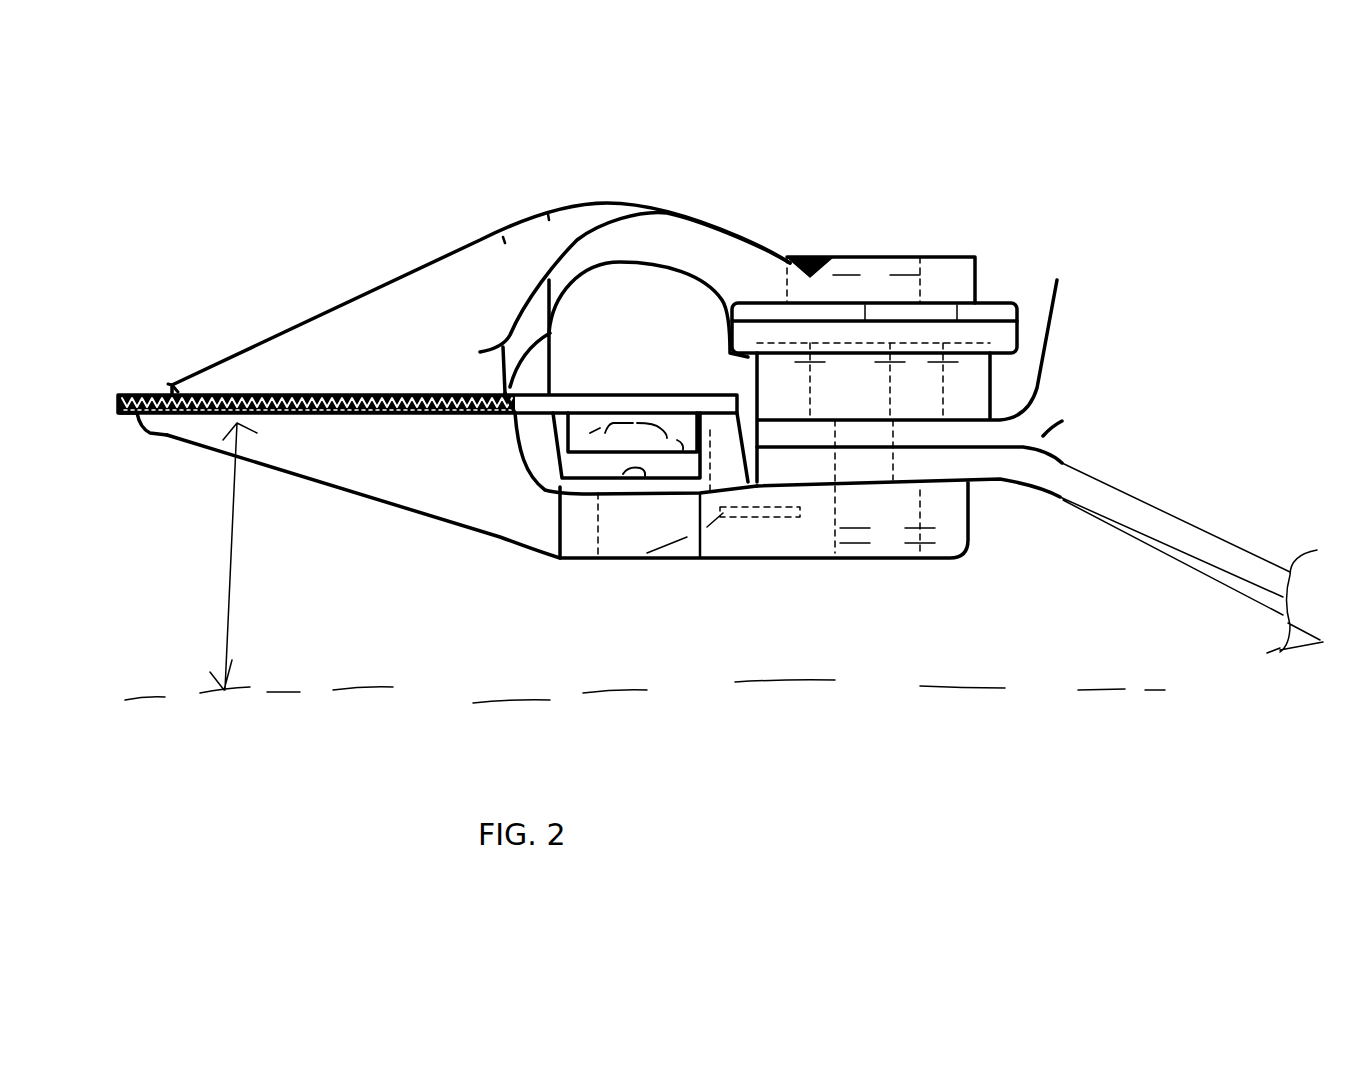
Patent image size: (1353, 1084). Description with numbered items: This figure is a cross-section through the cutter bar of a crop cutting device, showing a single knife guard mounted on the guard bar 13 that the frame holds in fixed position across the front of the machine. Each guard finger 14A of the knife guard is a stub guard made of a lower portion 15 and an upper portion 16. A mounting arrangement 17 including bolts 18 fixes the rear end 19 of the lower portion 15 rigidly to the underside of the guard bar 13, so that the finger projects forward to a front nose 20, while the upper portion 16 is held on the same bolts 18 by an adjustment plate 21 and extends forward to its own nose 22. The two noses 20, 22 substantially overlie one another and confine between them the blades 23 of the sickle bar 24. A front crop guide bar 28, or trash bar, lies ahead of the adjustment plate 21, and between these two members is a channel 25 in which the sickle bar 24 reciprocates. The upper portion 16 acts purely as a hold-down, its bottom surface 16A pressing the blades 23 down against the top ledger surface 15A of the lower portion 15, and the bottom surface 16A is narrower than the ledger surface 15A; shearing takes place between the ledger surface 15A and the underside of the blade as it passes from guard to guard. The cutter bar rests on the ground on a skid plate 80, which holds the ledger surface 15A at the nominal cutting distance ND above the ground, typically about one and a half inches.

The guard bar 13 is at (980, 458).
The guard finger 14A is at (435, 510).
The lower portion 15 is at (407, 489).
The ledger surface 15A is at (353, 362).
The upper portion 16 is at (382, 287).
The bottom surface 16A is at (480, 352).
The mounting arrangement 17 is at (908, 228).
The bolts 18 is at (893, 290).
The rear end 19 is at (800, 547).
The front nose 20 is at (167, 437).
The adjustment plate 21 is at (977, 393).
The nose 22 is at (218, 377).
The blades 23 is at (320, 417).
The sickle bar 24 is at (673, 427).
The channel 25 is at (633, 465).
The front crop guide bar 28 is at (540, 453).
The skid plate 80 is at (1216, 588).
The nominal cutting distance ND is at (228, 575).